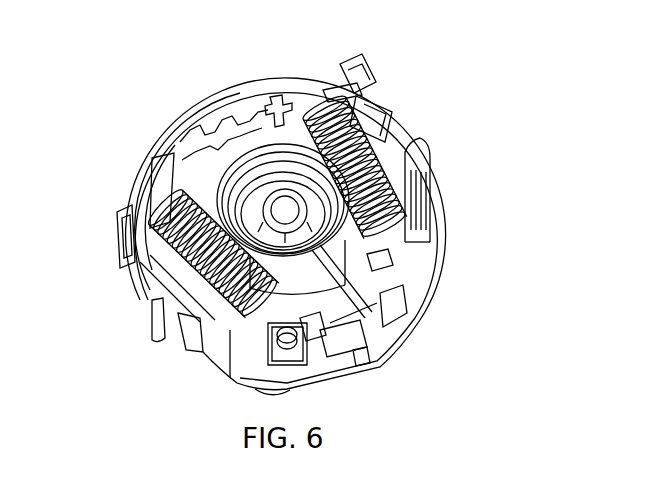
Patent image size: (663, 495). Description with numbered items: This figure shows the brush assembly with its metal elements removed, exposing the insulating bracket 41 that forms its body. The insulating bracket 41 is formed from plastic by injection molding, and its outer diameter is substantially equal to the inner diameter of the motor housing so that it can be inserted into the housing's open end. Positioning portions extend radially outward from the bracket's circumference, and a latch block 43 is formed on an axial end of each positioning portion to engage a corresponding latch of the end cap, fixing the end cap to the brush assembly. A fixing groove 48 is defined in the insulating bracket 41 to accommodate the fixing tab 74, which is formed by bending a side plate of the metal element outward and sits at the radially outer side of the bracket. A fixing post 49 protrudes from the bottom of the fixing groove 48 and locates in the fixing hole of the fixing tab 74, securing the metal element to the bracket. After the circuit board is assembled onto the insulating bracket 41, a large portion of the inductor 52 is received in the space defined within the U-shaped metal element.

The insulating bracket 41 is at (243, 133).
The latch block 43 is at (127, 247).
The fixing groove 48 is at (392, 120).
The fixing post 49 is at (405, 140).
The inductor 52 is at (360, 72).
The fixing tab 74 is at (410, 122).